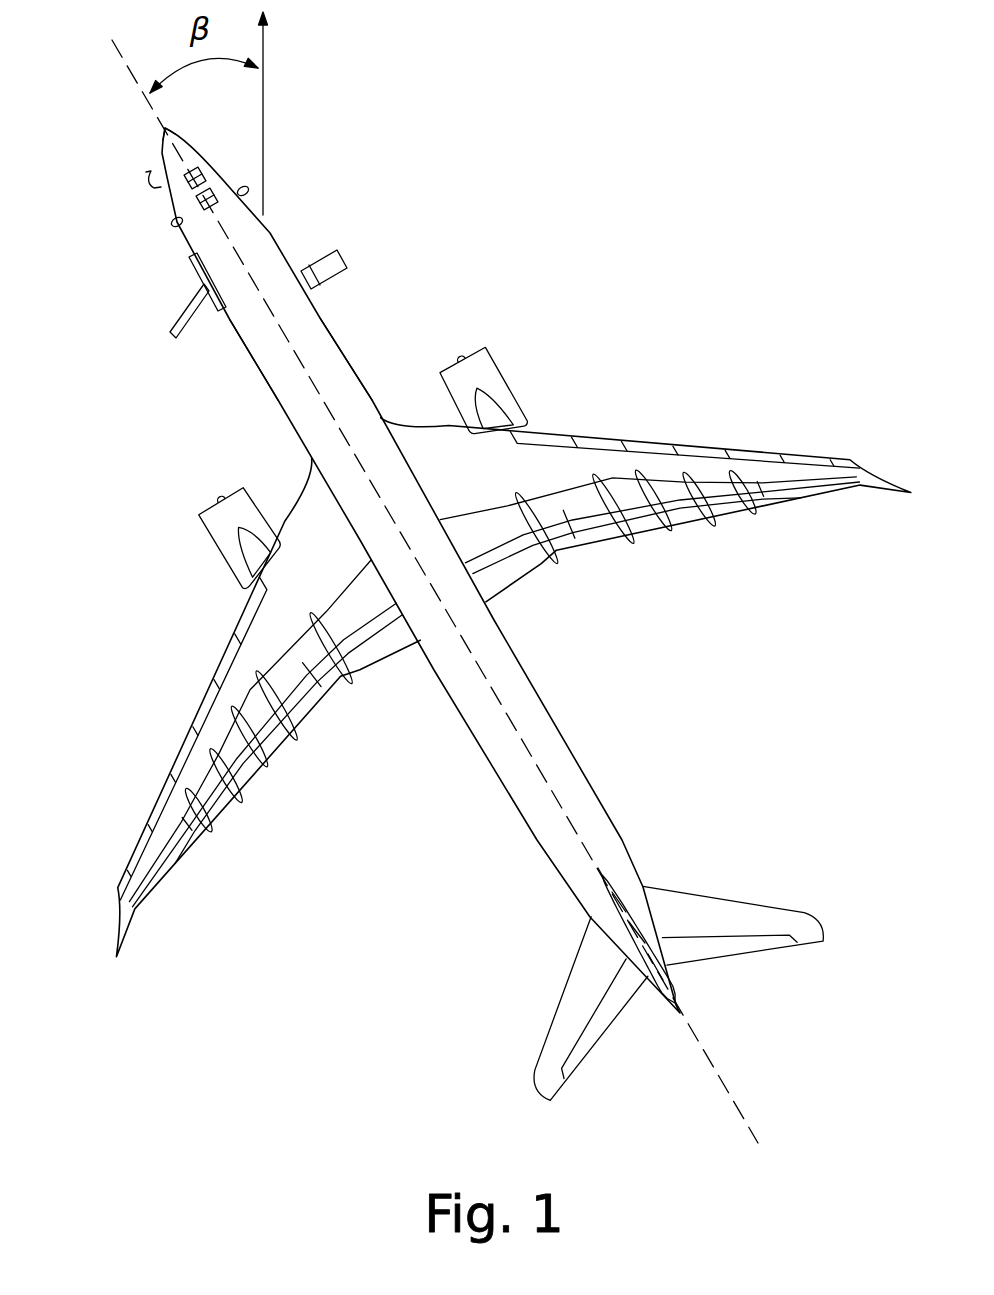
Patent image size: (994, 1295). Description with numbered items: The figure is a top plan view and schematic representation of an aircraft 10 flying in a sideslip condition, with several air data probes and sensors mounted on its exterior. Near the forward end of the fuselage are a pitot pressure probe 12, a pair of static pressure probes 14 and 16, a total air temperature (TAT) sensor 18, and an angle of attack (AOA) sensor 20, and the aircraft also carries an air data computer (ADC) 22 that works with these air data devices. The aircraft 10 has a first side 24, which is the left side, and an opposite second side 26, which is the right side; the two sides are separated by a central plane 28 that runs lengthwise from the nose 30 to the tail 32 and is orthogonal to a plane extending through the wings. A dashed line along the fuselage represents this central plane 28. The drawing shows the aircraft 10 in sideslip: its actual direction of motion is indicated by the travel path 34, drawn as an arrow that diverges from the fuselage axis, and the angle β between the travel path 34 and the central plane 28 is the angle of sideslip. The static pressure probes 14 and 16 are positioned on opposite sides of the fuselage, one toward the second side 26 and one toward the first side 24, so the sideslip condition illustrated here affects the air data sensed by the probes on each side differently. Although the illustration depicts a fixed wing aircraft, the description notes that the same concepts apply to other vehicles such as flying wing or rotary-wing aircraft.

The aircraft 10 is at (473, 742).
The pitot pressure probe 12 is at (150, 178).
The static pressure probe 14 is at (250, 190).
The static pressure probe 16 is at (173, 226).
The total air temperature (TAT) sensor 18 is at (346, 258).
The angle of attack (AOA) sensor 20 is at (167, 326).
The air data computer (ADC) 22 is at (192, 174).
The first side 24 is at (211, 341).
The second side 26 is at (343, 333).
The central plane 28 is at (325, 405).
The nose 30 is at (155, 127).
The tail 32 is at (657, 997).
The travel path 34 is at (266, 44).